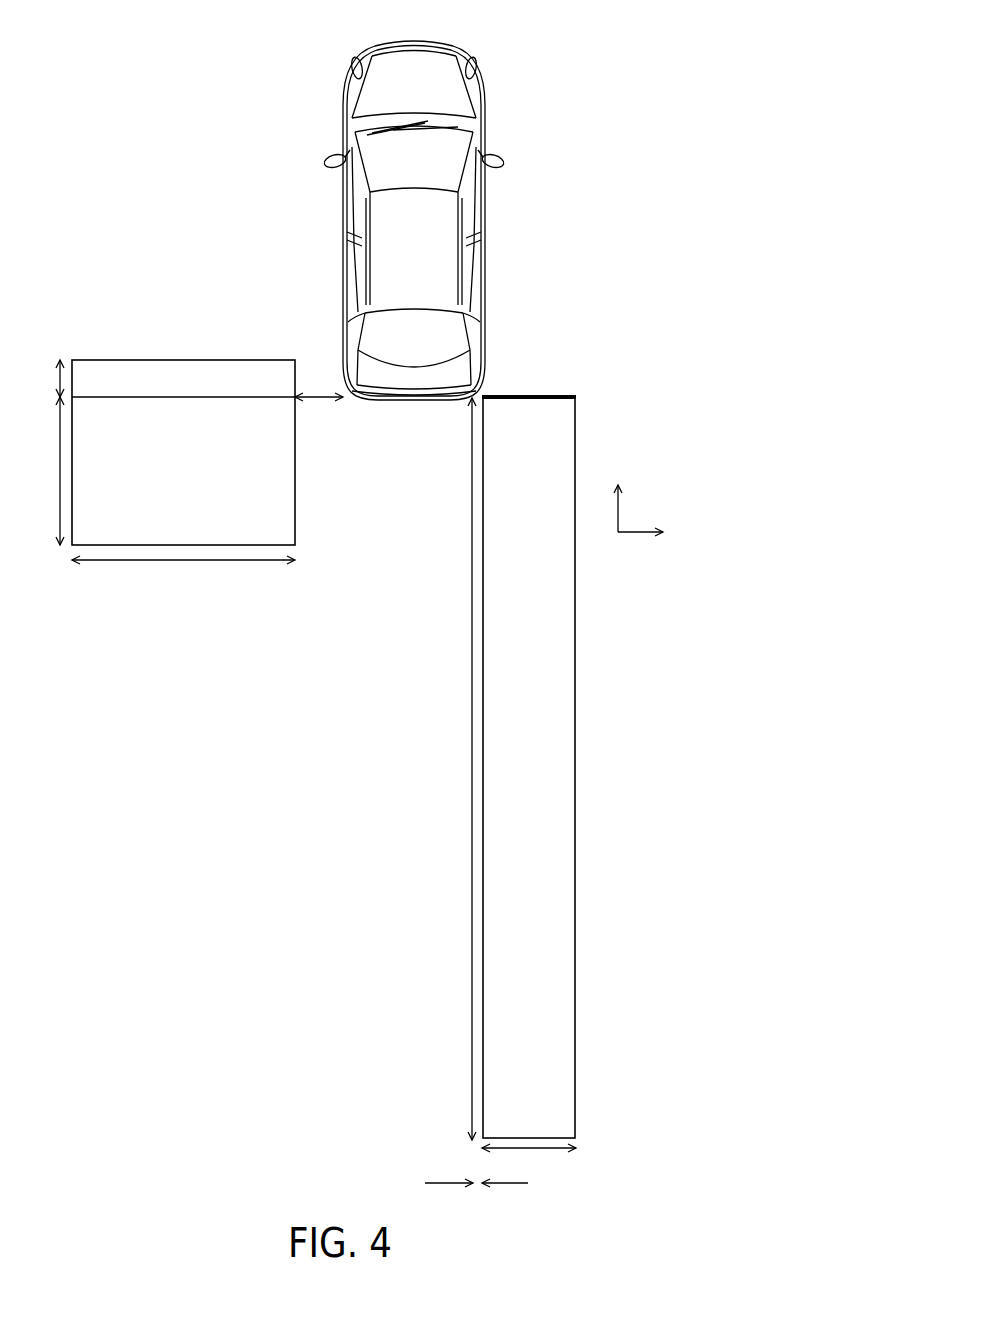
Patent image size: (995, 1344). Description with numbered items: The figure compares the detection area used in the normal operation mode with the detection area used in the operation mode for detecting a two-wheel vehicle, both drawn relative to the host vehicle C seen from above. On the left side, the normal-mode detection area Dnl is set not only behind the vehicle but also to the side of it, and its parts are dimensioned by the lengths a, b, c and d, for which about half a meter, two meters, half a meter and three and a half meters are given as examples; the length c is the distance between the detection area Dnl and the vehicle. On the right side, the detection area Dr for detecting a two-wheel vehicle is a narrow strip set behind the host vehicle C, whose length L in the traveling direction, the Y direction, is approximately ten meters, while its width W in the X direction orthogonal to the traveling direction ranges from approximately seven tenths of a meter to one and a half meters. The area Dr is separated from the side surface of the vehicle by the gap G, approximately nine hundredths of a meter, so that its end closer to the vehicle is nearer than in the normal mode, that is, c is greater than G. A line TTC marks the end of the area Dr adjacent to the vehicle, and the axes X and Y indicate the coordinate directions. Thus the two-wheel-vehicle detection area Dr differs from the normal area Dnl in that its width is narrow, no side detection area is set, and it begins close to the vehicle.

The host vehicle C is at (413, 42).
The detection area Dnl is at (296, 471).
The detection area Dr is at (576, 768).
The time-to-collision line TTC is at (563, 400).
The length a is at (48, 378).
The length b is at (51, 471).
The length c is at (319, 411).
The length d is at (183, 577).
The length L is at (463, 769).
The width W of right-side region W is at (529, 1162).
The separation G is at (476, 1197).
The X direction X is at (651, 539).
The Y direction Y is at (616, 498).